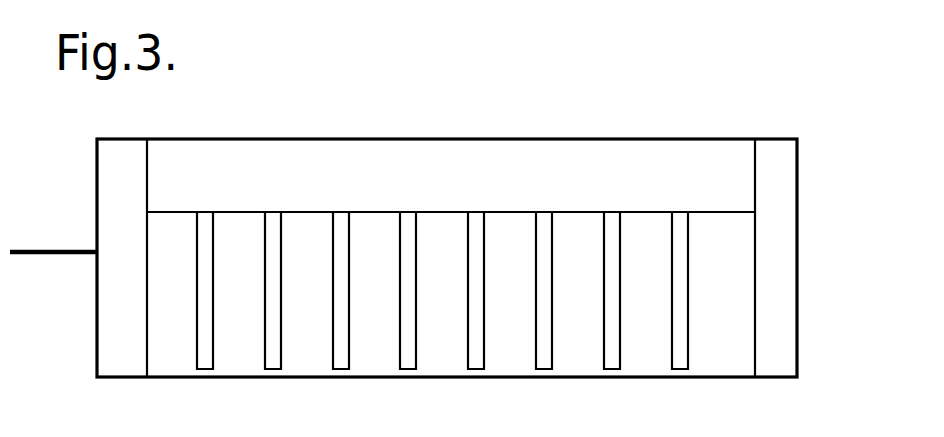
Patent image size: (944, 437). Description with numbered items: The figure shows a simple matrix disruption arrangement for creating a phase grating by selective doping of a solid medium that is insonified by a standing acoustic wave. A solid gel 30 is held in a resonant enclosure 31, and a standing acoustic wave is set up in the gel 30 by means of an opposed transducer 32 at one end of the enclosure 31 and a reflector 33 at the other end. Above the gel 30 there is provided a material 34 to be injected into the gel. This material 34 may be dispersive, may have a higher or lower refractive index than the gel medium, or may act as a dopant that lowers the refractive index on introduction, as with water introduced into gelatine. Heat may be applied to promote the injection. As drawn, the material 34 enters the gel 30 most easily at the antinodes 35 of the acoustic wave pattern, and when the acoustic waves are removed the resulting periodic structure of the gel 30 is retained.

The gel 30 is at (442, 319).
The resonant enclosure 31 is at (497, 139).
The transducer 32 is at (103, 307).
The reflector 33 is at (788, 263).
The material to be injected 34 is at (713, 193).
The antinodes 35 is at (477, 350).